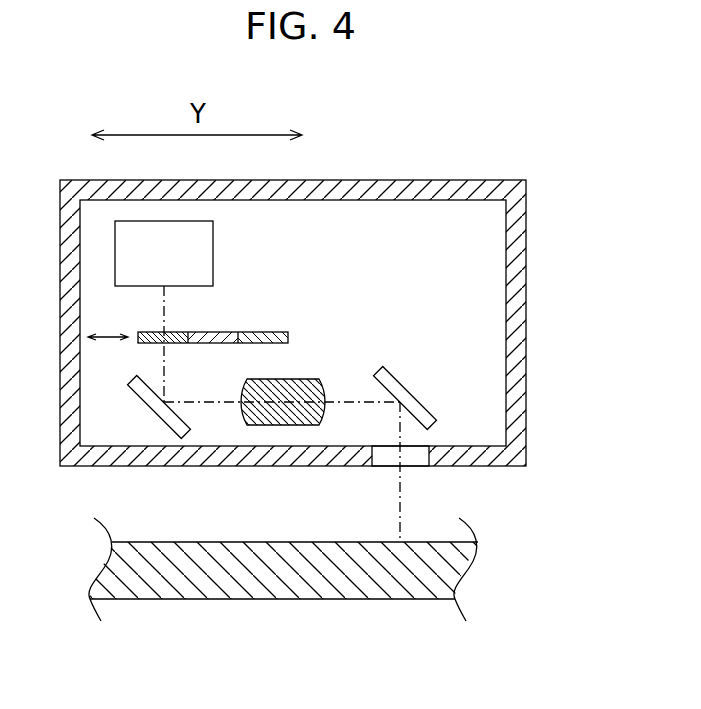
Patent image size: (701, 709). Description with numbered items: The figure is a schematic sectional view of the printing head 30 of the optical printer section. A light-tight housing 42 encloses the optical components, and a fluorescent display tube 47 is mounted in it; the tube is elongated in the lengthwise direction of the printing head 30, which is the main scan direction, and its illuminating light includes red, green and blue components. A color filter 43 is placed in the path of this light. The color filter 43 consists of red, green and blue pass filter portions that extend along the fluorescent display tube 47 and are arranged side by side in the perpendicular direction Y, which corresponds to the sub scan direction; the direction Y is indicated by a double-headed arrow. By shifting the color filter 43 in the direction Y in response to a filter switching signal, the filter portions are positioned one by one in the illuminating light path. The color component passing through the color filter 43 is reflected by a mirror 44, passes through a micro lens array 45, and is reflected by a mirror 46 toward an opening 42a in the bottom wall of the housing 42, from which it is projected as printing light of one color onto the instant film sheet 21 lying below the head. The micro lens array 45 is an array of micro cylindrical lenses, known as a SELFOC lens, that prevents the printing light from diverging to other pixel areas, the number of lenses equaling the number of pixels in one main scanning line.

The printing head 30 is at (422, 176).
The light-tight housing 42 is at (526, 265).
The opening 42a is at (429, 456).
The fluorescent display tube 47 is at (213, 253).
The color filter 43 is at (288, 337).
The mirror 44 is at (142, 398).
The micro lens array 45 is at (274, 425).
The mirror 46 is at (407, 388).
The instant film sheet 21 is at (283, 563).